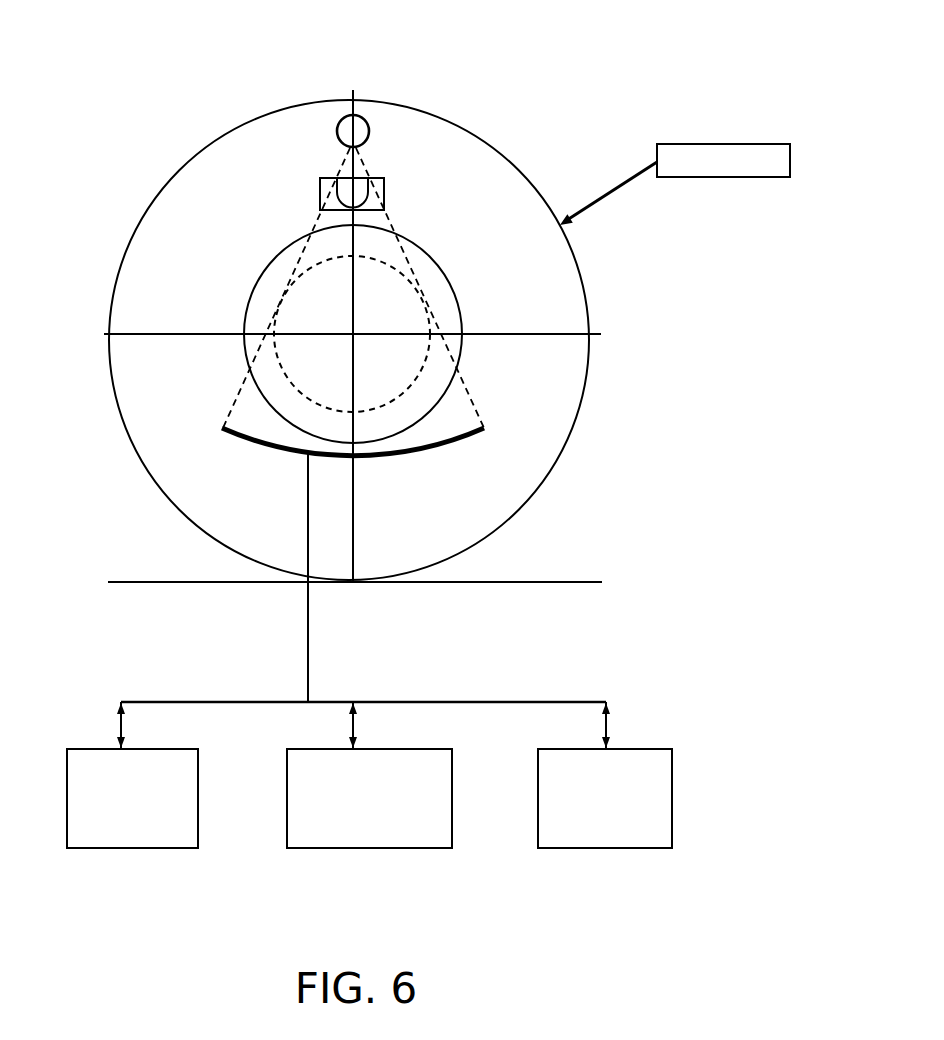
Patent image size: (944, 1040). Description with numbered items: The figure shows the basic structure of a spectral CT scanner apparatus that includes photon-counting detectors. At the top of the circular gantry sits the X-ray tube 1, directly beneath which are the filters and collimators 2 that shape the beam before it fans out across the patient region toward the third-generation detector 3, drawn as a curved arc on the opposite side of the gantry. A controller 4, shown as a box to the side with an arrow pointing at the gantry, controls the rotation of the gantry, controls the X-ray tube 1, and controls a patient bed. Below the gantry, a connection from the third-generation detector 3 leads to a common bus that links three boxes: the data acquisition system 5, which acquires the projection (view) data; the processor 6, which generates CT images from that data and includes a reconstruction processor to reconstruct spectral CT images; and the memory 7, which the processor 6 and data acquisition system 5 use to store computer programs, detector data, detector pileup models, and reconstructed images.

The X-ray tube 1 is at (364, 120).
The filters and collimators 2 is at (386, 185).
The third-generation detector 3 is at (483, 430).
The controller 4 is at (768, 177).
The data acquisition system 5 is at (143, 849).
The processor 6 is at (410, 849).
The memory 7 is at (637, 849).